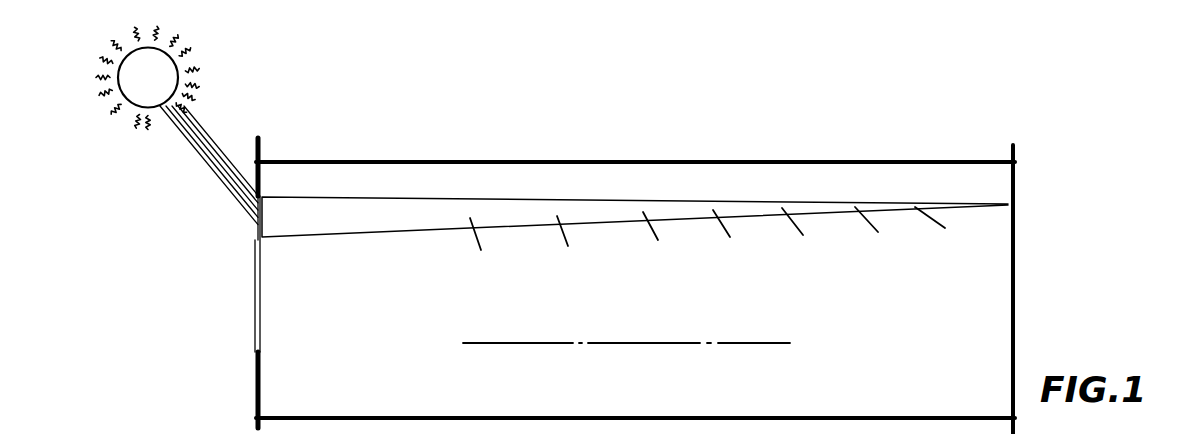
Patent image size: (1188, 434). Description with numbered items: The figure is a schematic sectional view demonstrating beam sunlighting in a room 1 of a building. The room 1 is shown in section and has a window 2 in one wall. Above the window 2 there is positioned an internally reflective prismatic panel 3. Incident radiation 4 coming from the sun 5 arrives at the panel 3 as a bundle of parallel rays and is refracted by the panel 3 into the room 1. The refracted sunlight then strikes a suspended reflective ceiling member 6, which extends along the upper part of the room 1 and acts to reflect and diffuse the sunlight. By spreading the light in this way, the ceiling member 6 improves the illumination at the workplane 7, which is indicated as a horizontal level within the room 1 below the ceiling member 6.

The room 1 is at (525, 148).
The window 2 is at (257, 317).
The internally reflective prismatic panel 3 is at (258, 221).
The incident radiation 4 is at (210, 146).
The sun 5 is at (175, 77).
The suspended reflective ceiling member 6 is at (752, 203).
The workplane 7 is at (612, 343).